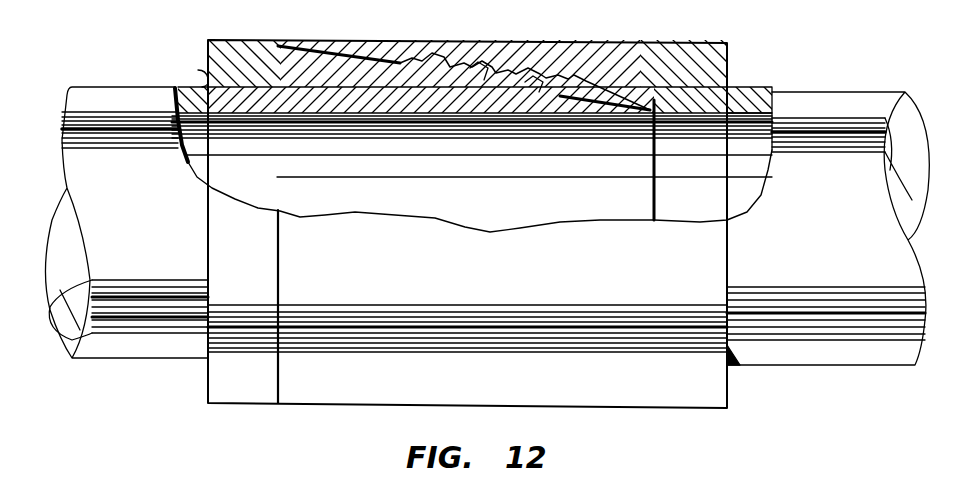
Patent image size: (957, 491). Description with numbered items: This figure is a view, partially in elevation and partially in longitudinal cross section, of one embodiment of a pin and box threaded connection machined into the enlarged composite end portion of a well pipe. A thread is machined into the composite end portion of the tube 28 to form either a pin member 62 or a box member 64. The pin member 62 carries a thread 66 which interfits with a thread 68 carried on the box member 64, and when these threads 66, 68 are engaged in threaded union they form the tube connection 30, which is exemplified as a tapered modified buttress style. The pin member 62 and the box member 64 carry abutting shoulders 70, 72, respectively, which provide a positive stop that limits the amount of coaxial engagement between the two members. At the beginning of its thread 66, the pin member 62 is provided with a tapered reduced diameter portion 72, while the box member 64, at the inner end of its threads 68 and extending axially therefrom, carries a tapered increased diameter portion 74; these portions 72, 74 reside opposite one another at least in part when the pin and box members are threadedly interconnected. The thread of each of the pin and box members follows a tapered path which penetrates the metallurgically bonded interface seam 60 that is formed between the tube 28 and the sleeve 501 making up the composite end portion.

The tube 28 is at (822, 92).
The tube connection 30 is at (489, 428).
The metallurgically bonded interface seam 60 is at (204, 78).
The pin member 62 is at (613, 112).
The box member 64 is at (302, 44).
The thread 66 is at (533, 92).
The thread 68 is at (477, 87).
The abutting shoulder 70 is at (675, 115).
The tapered reduced diameter portion 72 is at (264, 47).
The tapered increased diameter portion 74 is at (592, 67).
The sleeve 501 is at (529, 42).